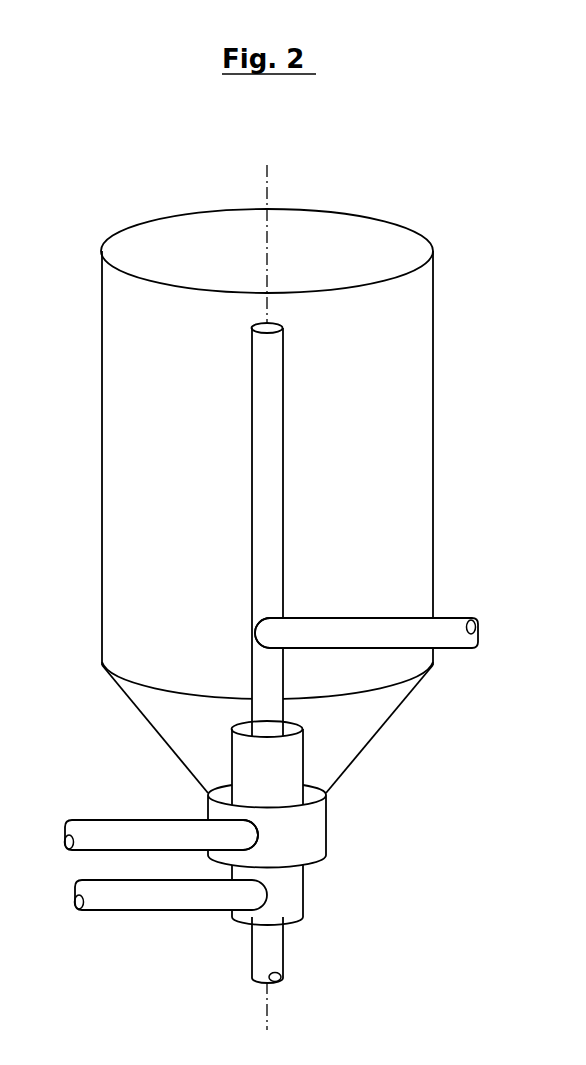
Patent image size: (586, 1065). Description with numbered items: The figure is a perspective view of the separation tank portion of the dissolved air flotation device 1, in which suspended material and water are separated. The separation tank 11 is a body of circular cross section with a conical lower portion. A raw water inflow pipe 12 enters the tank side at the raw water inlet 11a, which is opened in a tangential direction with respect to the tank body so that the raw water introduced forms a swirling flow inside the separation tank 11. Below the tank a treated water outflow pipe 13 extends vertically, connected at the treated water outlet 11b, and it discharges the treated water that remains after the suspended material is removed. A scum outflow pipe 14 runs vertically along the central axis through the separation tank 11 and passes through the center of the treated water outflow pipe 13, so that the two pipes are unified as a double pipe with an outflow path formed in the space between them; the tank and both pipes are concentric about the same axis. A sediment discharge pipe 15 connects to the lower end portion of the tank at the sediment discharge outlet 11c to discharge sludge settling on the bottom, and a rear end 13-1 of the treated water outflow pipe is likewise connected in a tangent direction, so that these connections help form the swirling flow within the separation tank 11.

The dissolved air flotation device 1 is at (271, 567).
The separation tank 11 is at (302, 501).
The raw water inlet 11a is at (155, 605).
The treated water outlet 11b is at (296, 841).
The sediment discharge outlet 11c is at (313, 826).
The raw water inflow pipe 12 is at (376, 603).
The treated water outflow pipe 13 is at (313, 823).
The rear end of the treated water outflow pipe 13-1 is at (96, 913).
The scum outflow pipe 14 is at (202, 653).
The sediment discharge pipe 15 is at (155, 806).